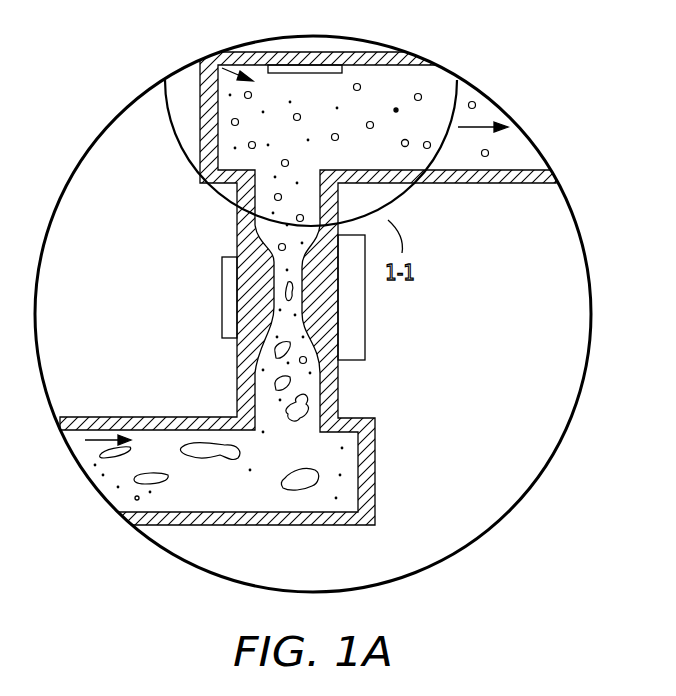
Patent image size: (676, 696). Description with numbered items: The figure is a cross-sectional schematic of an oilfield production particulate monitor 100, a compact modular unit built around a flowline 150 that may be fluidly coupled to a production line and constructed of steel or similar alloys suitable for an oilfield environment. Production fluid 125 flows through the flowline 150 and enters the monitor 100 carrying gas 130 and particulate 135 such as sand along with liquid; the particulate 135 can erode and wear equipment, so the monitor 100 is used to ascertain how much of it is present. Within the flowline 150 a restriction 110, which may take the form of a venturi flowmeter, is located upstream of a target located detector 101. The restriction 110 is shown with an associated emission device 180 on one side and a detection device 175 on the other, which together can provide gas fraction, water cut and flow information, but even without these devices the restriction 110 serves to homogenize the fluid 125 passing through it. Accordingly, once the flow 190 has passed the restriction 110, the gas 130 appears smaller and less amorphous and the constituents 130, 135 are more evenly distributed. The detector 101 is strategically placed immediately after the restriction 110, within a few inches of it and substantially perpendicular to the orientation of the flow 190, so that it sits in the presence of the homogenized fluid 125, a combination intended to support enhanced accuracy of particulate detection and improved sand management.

The oilfield production particulate monitor 100 is at (122, 153).
The target located detector 101 is at (328, 78).
The restriction 110 is at (178, 247).
The production fluid 125 is at (213, 58).
The gas 130 is at (405, 147).
The particulate 135 is at (396, 108).
The flowline 150 is at (470, 184).
The detection device 175 is at (353, 312).
The emission device 180 is at (228, 310).
The flow 190 is at (480, 126).